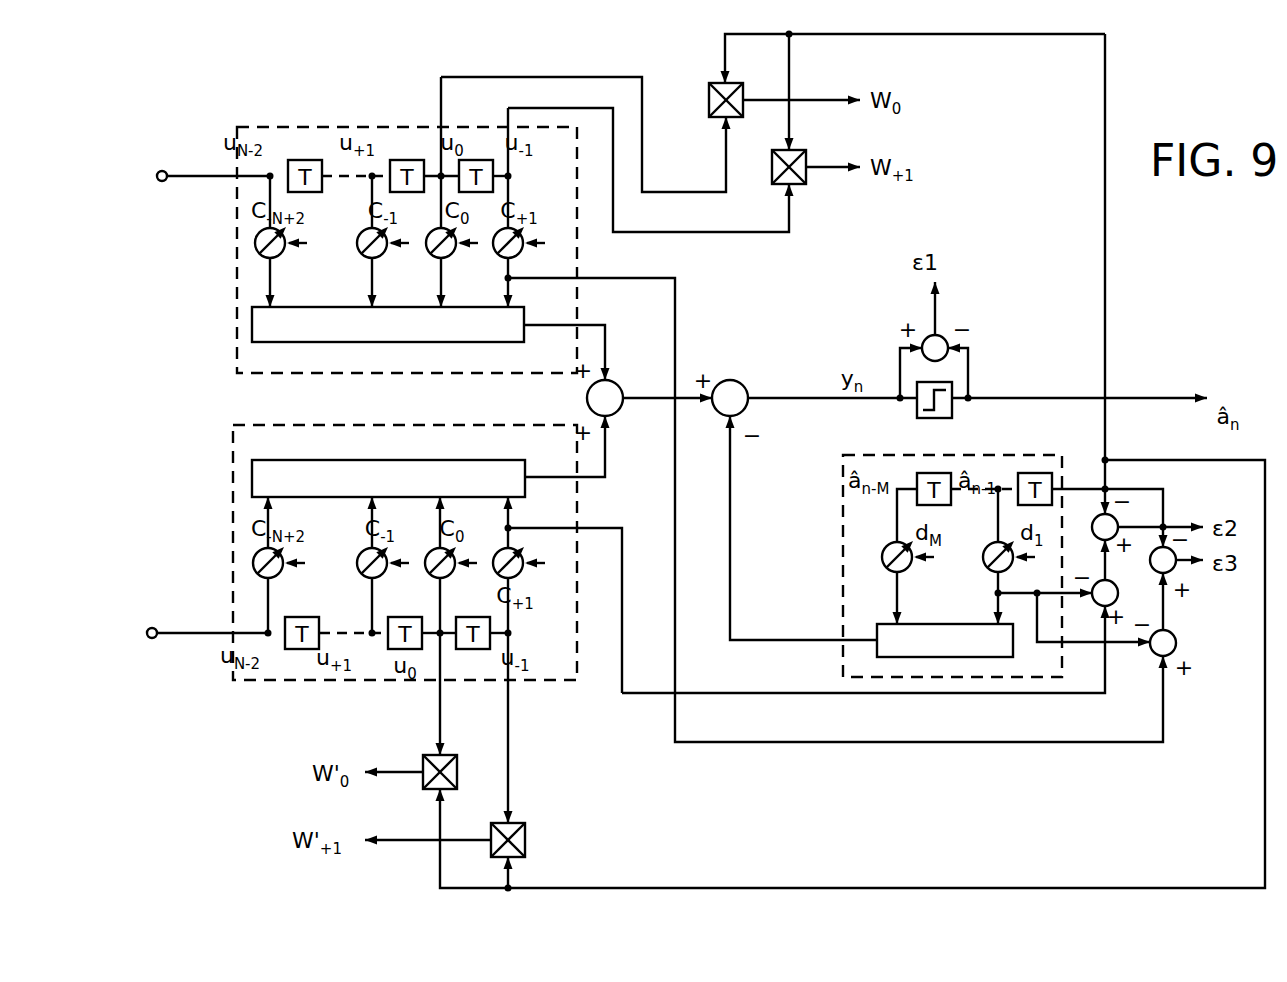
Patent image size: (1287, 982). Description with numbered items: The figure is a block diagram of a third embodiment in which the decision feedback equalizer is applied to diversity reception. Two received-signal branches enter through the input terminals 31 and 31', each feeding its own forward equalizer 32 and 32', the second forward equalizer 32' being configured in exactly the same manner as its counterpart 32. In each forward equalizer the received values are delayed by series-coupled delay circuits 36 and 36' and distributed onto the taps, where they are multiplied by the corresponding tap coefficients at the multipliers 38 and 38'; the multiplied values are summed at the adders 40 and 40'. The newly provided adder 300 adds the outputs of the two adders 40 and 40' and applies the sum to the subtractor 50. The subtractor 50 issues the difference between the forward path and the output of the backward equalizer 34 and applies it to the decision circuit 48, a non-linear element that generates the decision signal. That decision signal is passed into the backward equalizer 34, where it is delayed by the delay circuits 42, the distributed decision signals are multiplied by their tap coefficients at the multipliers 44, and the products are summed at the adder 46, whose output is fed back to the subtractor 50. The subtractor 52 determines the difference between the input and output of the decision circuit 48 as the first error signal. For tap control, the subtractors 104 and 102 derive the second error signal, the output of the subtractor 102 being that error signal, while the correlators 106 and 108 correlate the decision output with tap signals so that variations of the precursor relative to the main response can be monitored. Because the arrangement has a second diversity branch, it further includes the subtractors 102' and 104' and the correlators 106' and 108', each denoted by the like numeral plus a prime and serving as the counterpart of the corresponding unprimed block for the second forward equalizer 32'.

The input terminal 31 is at (203, 213).
The input terminal 31' is at (198, 666).
The forward equalizer 32 is at (449, 250).
The forward equalizer 32' is at (361, 552).
The backward equalizer 34 is at (843, 567).
The delay circuits 36 is at (390, 132).
The delay circuits 36' is at (379, 677).
The multipliers 38 is at (400, 264).
The multipliers 38' is at (451, 552).
The adder 40 is at (388, 342).
The adder 40' is at (388, 462).
The delay circuits 42 is at (928, 473).
The multipliers 44 is at (988, 569).
The adder 46 is at (877, 648).
The decision circuit 48 is at (917, 412).
The subtractor 50 is at (738, 382).
The subtractor 52 is at (944, 338).
The subtractor 102 is at (1163, 503).
The subtractor 102' is at (1133, 566).
The subtractor 104 is at (1166, 610).
The subtractor 104' is at (1123, 682).
The correlator 106 is at (685, 75).
The correlator 106' is at (544, 840).
The correlator 108 is at (833, 149).
The correlator 108' is at (503, 766).
The adder 300 is at (618, 386).